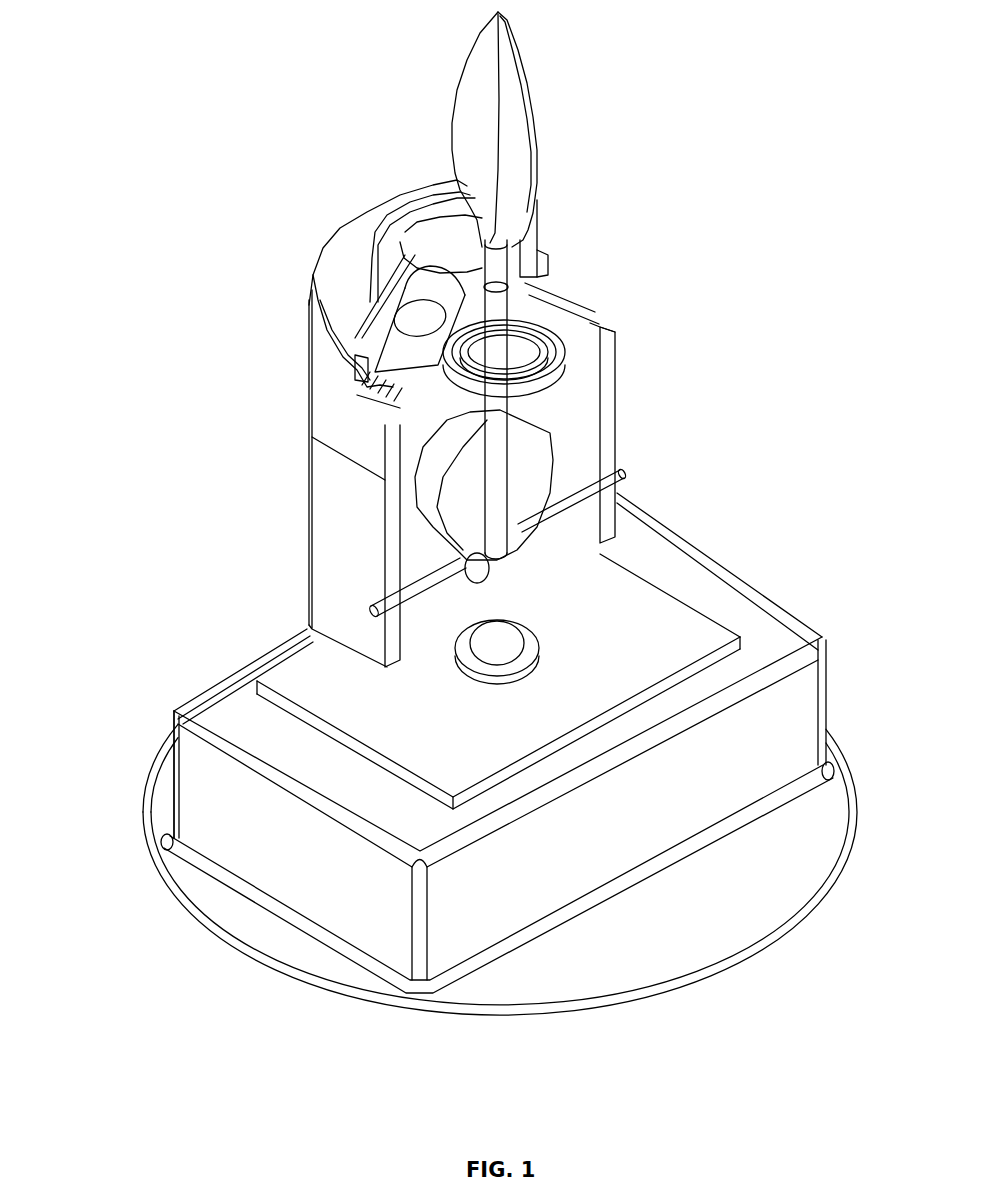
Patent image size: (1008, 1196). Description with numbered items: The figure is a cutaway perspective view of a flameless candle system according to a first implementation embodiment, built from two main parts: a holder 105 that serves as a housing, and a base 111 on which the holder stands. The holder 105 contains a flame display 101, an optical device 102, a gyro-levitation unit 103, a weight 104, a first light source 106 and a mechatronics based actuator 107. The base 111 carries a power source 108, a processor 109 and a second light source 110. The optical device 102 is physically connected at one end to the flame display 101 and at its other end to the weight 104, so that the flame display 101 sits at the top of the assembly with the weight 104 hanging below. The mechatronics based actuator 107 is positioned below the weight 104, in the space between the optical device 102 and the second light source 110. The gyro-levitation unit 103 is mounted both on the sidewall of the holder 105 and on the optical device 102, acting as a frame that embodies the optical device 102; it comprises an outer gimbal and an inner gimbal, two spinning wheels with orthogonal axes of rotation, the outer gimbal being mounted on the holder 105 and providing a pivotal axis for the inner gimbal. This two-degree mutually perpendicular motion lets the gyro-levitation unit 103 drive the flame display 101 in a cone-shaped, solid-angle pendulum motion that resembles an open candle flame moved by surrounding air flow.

The flame display 101 is at (517, 137).
The optical device 102 is at (498, 305).
The gyro-levitation unit 103 is at (567, 371).
The weight 104 is at (528, 462).
The holder 105 is at (348, 270).
The first light source 106 is at (420, 345).
The mechatronics based actuator 107 is at (571, 514).
The power source 108 is at (648, 718).
The processor 109 is at (572, 682).
The second light source 110 is at (500, 643).
The base 111 is at (215, 698).